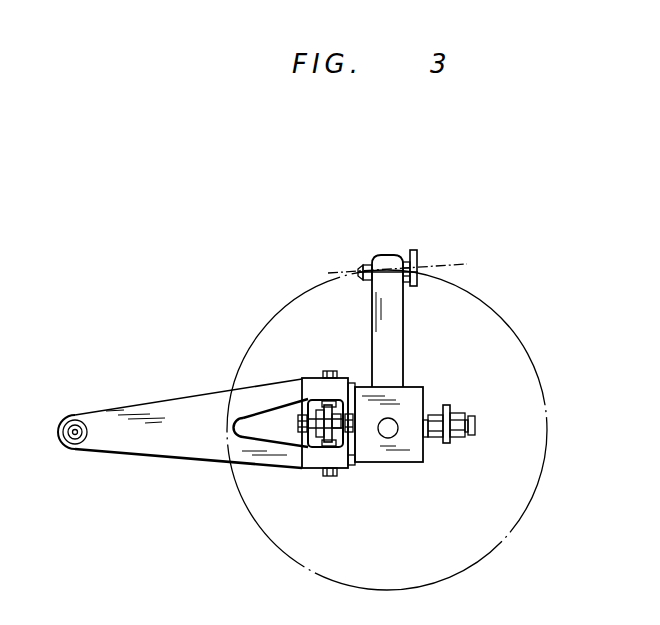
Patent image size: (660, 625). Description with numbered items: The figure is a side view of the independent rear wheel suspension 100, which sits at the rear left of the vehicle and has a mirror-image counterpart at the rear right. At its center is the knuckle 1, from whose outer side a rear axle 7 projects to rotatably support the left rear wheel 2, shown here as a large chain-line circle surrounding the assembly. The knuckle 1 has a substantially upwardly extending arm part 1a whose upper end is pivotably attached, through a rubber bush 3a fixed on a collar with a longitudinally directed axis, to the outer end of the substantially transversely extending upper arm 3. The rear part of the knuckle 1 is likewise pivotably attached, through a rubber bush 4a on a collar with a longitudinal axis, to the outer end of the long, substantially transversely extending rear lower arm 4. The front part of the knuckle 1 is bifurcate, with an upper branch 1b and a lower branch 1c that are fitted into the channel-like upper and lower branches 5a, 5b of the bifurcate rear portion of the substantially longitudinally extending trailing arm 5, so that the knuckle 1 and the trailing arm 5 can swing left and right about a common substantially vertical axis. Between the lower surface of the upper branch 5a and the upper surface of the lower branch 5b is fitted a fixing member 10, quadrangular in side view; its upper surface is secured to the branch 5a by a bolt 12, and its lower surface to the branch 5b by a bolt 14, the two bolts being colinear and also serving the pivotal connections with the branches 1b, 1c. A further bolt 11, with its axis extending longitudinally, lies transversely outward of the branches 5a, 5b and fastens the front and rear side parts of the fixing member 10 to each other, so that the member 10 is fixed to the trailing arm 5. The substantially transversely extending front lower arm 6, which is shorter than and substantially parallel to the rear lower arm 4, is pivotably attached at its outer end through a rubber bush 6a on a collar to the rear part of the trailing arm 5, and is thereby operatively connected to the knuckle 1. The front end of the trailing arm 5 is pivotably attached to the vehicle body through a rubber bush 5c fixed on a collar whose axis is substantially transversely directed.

The independent rear wheel suspension 100 is at (167, 305).
The knuckle 1 is at (413, 468).
The arm part 1a is at (390, 338).
The upper branch 1b is at (353, 388).
The lower branch 1c is at (353, 458).
The left rear wheel 2 is at (554, 381).
The upper arm 3 is at (420, 252).
The rubber bush 3a is at (402, 262).
The rear lower arm 4 is at (452, 397).
The rubber bush 4a is at (455, 438).
The trailing arm 5 is at (155, 458).
The upper branch 5a is at (312, 387).
The lower branch 5b is at (313, 465).
The rubber bush 5c is at (78, 416).
The front lower arm 6 is at (312, 448).
The rubber bush 6a is at (300, 394).
The rear axle 7 is at (398, 433).
The fixing member 10 is at (302, 379).
The bolt 11 is at (356, 421).
The bolt 12 is at (317, 374).
The bolt 14 is at (332, 477).